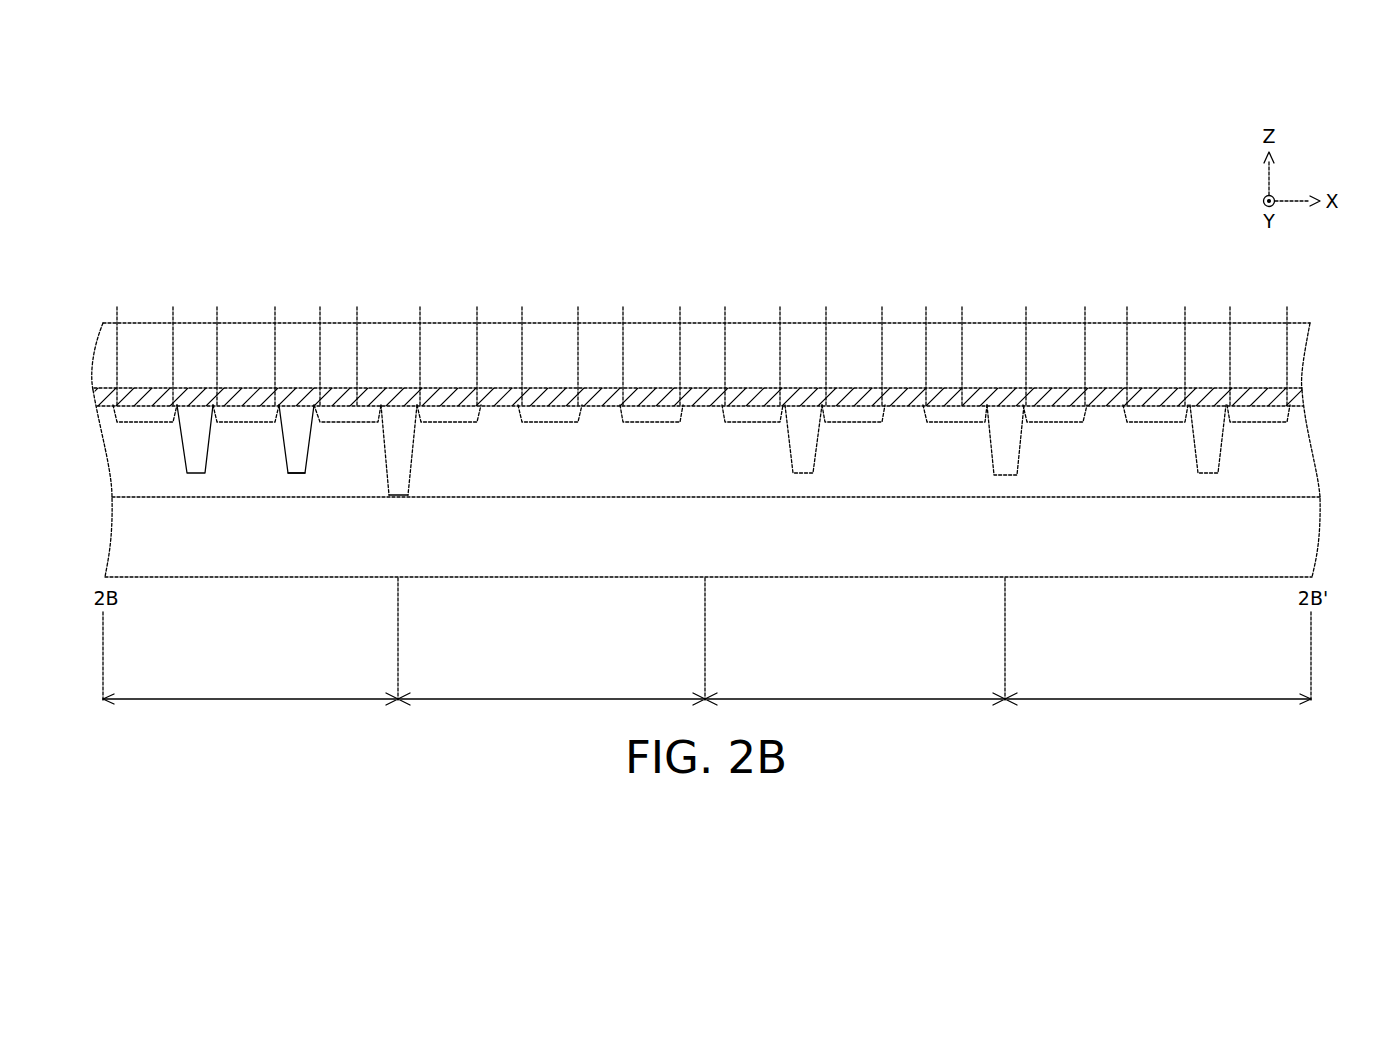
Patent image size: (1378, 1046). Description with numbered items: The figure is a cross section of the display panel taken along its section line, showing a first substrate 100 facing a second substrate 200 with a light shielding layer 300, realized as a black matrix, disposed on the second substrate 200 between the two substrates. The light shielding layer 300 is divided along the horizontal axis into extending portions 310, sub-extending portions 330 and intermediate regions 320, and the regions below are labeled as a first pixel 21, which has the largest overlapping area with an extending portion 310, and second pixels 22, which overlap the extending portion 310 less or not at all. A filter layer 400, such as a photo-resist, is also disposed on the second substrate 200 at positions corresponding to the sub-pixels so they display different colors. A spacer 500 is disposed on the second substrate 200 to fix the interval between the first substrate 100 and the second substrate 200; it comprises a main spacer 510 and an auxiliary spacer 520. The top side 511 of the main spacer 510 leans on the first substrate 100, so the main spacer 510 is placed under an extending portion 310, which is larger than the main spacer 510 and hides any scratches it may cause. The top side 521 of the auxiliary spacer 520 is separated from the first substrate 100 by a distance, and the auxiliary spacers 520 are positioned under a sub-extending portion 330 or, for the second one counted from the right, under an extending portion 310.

The first substrate 100 is at (1293, 542).
The second substrate 200 is at (1295, 367).
The light shielding layer 300 is at (1298, 397).
The filter layer 400 is at (1280, 413).
The extending portion 310 is at (1026, 309).
The second region 320 is at (1287, 309).
The sub-extending portion 330 is at (1325, 304).
The spacer 500 is at (290, 618).
The main spacer 510 is at (400, 457).
The top side of the main spacer 511 is at (401, 500).
The auxiliary spacer 520 is at (300, 453).
The top side of the auxiliary spacer 521 is at (297, 480).
The first pixel 21 is at (554, 641).
The second pixel 22 is at (848, 658).